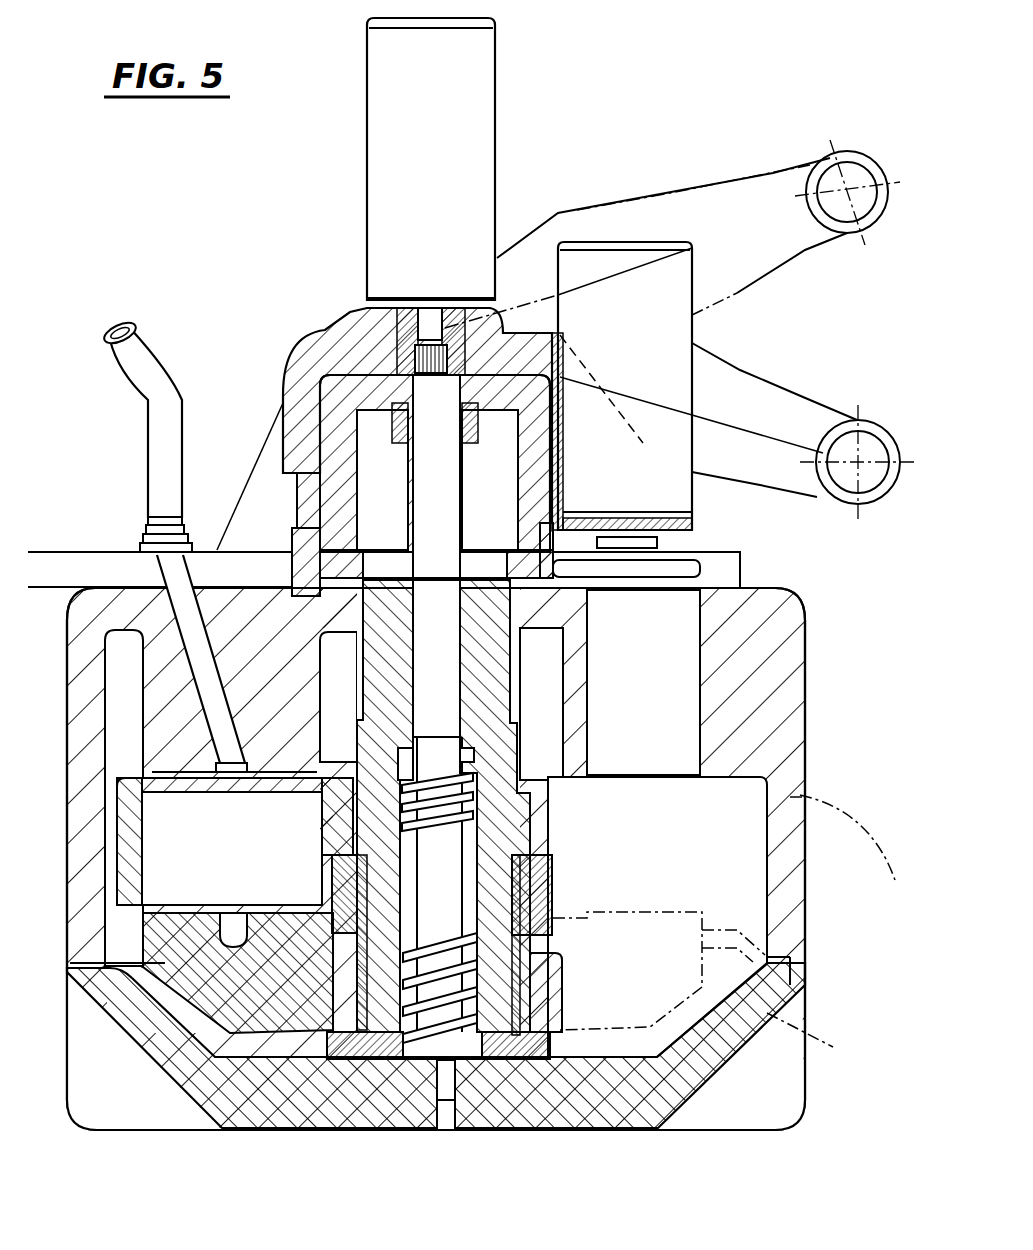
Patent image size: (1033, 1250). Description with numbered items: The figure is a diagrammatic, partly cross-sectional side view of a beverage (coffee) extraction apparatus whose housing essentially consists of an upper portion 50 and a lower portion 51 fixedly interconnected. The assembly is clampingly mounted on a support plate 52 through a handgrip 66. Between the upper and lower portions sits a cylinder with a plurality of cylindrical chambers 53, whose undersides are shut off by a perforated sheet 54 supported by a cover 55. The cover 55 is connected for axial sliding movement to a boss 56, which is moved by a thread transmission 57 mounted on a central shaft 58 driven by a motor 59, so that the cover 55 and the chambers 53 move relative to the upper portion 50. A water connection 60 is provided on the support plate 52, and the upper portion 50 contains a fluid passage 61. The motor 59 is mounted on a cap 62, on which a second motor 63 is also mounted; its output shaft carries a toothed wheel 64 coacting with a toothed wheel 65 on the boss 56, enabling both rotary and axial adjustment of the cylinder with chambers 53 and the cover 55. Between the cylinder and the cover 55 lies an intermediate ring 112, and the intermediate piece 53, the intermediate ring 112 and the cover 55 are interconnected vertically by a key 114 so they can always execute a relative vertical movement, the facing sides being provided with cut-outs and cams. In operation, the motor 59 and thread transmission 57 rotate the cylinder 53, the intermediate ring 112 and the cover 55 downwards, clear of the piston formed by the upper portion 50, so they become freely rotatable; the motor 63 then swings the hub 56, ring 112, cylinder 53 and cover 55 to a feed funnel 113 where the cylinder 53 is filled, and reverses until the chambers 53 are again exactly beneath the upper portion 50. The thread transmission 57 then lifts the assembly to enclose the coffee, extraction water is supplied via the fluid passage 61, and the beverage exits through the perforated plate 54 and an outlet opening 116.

The upper portion 50 is at (80, 678).
The lower portion 51 is at (95, 1010).
The support plate 52 is at (100, 570).
The cylindrical chambers 53 is at (125, 826).
The perforated sheet 54 is at (172, 905).
The cover 55 is at (170, 963).
The boss 56 is at (335, 885).
The thread transmission 57 is at (430, 1007).
The central shaft 58 is at (445, 508).
The motor 59 is at (372, 122).
The water connection 60 is at (158, 516).
The fluid passage 61 is at (181, 612).
The cap 62 is at (342, 330).
The motor 63 is at (578, 258).
The toothed wheel 64 is at (688, 570).
The toothed wheel 65 is at (358, 553).
The handgrip 66 is at (665, 205).
The intermediate ring 112 is at (548, 898).
The feed funnel 113 is at (700, 672).
The key 114 is at (340, 1060).
The outlet opening 116 is at (842, 942).